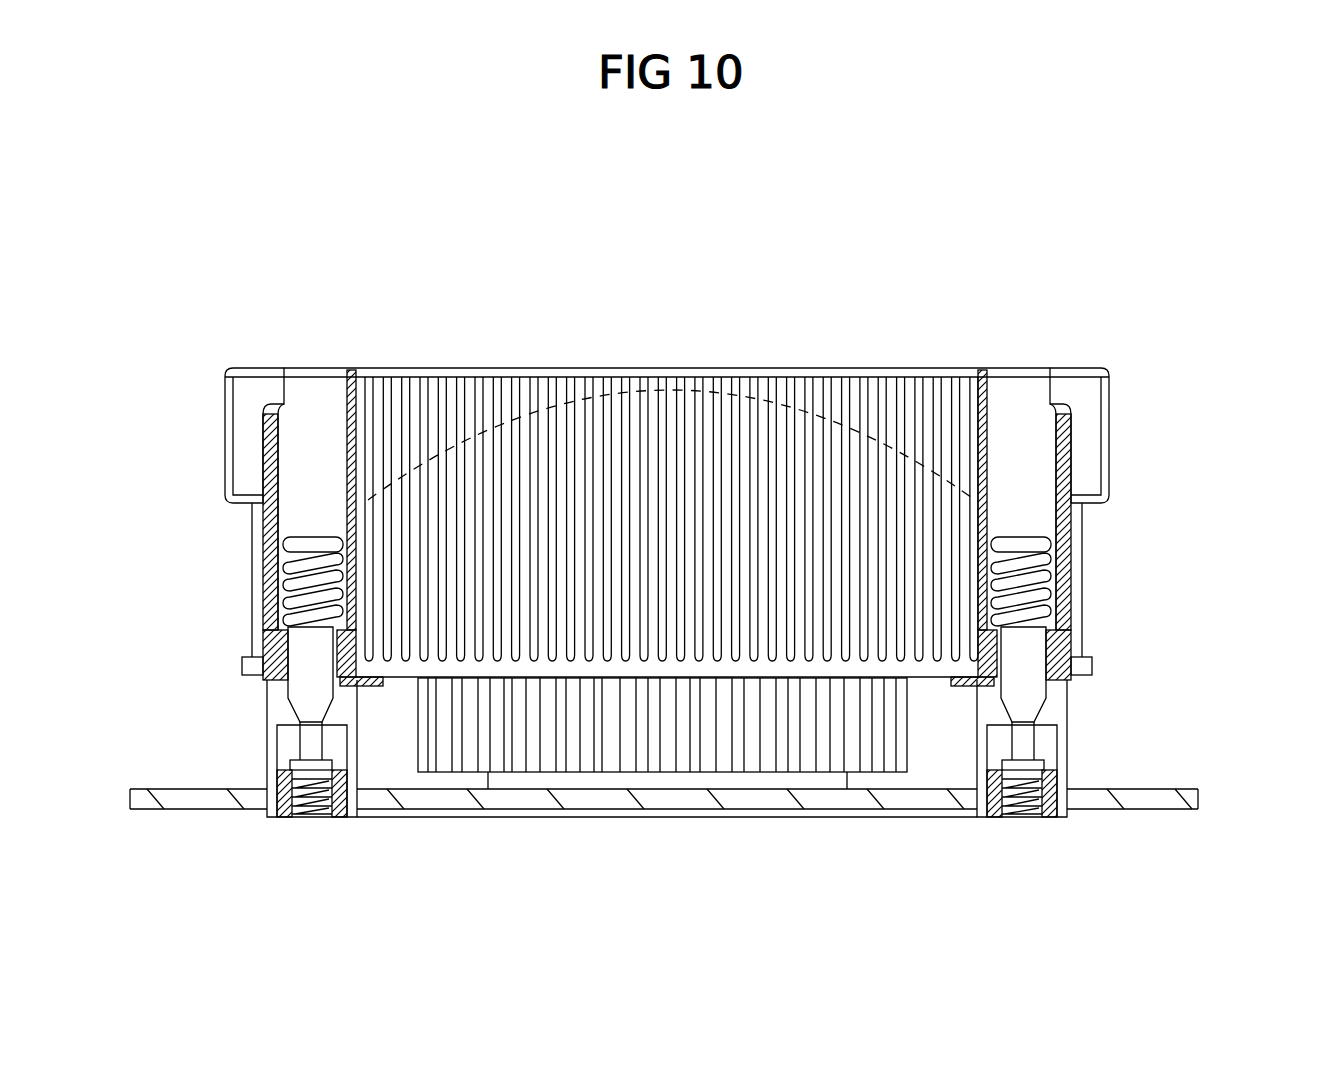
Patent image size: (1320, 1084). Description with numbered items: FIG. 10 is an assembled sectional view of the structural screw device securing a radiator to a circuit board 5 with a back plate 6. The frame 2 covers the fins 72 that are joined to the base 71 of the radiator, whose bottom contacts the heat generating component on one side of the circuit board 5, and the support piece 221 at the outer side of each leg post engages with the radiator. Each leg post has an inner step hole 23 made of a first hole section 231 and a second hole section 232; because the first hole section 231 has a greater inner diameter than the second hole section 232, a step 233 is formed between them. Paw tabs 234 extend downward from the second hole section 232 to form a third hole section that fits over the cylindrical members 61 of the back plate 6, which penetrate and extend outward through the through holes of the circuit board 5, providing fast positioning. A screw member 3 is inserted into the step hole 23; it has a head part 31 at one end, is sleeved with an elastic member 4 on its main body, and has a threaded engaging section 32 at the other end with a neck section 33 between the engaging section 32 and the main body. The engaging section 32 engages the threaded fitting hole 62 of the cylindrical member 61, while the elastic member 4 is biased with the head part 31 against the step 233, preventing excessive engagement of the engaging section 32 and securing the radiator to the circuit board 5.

The frame 2 is at (254, 400).
The step hole 23 is at (1227, 322).
The first hole section 231 is at (1055, 460).
The second hole section 232 is at (1038, 662).
The step 233 is at (275, 615).
The paw tabs 234 is at (272, 752).
The screw member 3 is at (290, 590).
The head part 31 is at (290, 540).
The engaging section 32 is at (1040, 768).
The neck section 33 is at (315, 710).
The elastic member 4 is at (286, 596).
The circuit board 5 is at (1190, 805).
The back plate 6 is at (738, 820).
The cylindrical members 61 is at (1057, 793).
The threaded fitting holes 62 is at (1020, 820).
The base 71 is at (892, 740).
The fins 72 is at (778, 450).
The support piece 221 is at (953, 690).